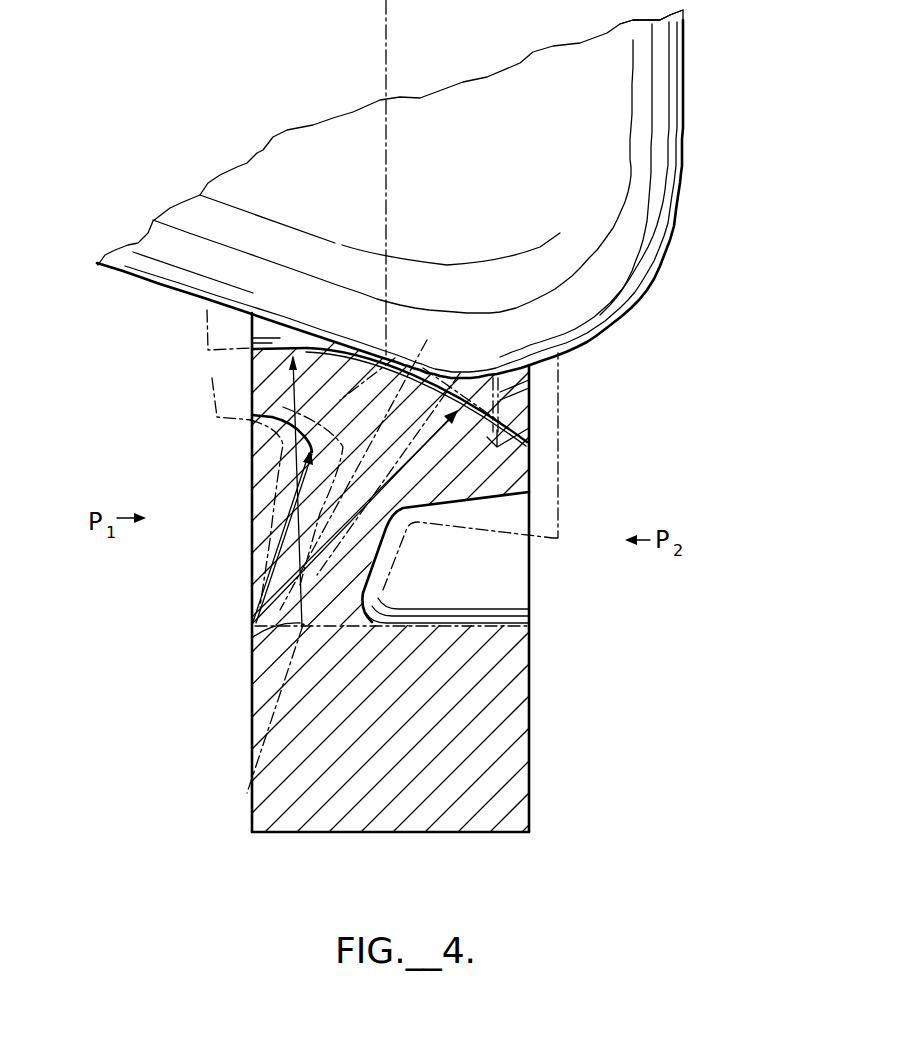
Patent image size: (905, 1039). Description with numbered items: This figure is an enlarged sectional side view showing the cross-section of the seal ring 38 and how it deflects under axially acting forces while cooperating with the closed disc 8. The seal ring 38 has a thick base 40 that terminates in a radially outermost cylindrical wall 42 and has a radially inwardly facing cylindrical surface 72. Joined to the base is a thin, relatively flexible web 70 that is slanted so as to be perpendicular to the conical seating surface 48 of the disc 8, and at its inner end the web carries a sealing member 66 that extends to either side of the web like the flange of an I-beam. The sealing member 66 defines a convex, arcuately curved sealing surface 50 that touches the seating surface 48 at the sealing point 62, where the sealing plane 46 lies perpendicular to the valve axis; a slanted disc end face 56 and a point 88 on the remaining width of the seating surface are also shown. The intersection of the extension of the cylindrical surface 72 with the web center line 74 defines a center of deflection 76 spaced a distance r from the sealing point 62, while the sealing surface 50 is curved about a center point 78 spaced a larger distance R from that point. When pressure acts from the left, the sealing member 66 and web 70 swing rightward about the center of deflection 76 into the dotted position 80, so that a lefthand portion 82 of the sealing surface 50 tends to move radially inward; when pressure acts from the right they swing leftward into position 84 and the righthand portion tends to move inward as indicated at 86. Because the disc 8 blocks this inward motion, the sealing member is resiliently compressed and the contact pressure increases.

The disc 8 is at (694, 113).
The seal ring 38 is at (537, 660).
The base 40 is at (512, 750).
The cylindrical wall 42 is at (454, 834).
The sealing plane 46 is at (383, 72).
The seating surface 48 is at (310, 201).
The sealing surface 50 is at (530, 426).
The disc end face 56 is at (748, 55).
The sealing point 62 is at (392, 360).
The sealing member 66 is at (512, 471).
The web 70 is at (325, 521).
The cylindrical surface 72 is at (490, 622).
The center line 74 is at (322, 572).
The center of deflection 76 is at (262, 630).
The center point 78 is at (251, 769).
The deflected position 80 is at (560, 540).
The lefthand portion 82 is at (325, 338).
The deflected position 84 is at (212, 386).
The radially inward movement 86 is at (427, 363).
The point 88 is at (268, 337).